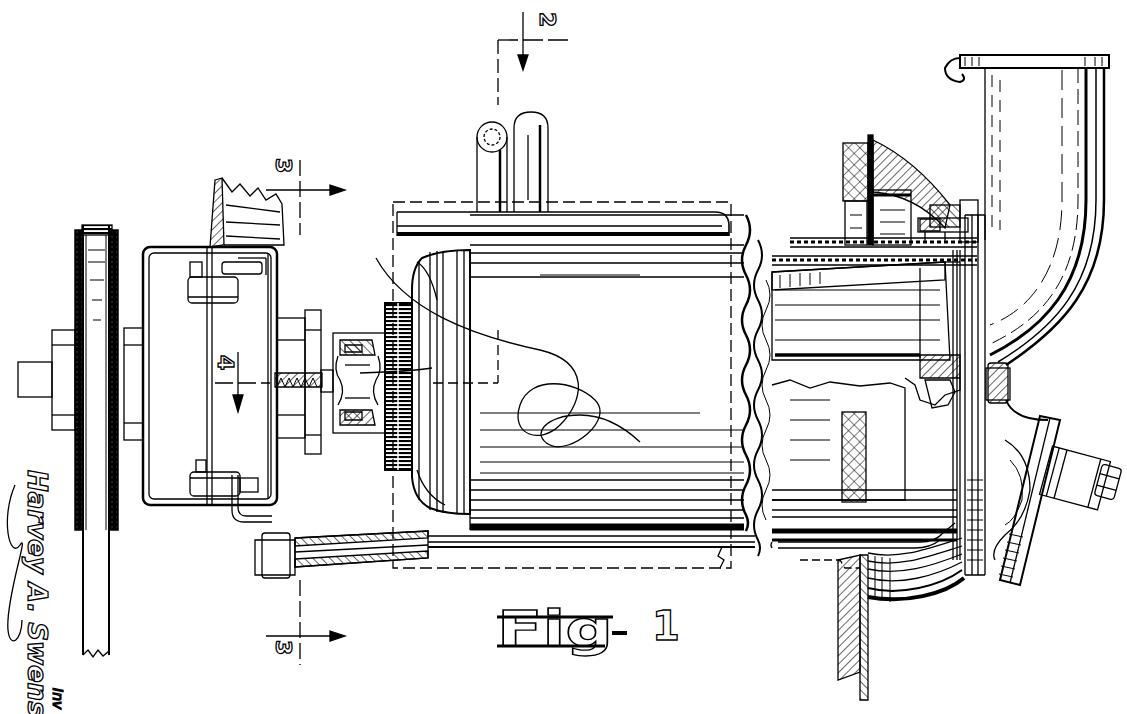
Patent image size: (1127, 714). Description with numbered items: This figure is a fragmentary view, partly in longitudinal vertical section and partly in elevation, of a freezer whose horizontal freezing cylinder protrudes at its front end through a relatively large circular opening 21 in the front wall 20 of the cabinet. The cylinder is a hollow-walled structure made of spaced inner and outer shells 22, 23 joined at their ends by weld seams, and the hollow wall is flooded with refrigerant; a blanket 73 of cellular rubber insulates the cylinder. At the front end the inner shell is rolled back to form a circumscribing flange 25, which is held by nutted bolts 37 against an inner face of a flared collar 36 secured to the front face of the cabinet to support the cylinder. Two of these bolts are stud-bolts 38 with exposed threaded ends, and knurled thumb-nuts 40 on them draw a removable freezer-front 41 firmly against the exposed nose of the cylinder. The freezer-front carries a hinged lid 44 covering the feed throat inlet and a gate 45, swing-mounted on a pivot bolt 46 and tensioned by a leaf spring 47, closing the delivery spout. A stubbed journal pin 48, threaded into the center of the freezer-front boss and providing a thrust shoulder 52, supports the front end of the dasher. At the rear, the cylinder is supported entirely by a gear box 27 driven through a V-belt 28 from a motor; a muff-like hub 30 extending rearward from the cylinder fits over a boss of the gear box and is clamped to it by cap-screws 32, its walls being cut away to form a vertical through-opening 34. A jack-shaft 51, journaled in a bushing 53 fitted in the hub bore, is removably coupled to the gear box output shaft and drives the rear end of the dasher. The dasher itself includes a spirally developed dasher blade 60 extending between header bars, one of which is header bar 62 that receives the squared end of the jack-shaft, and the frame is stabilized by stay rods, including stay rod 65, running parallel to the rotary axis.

The front wall 20 is at (843, 160).
The opening 21 is at (845, 203).
The inner shell 22 is at (785, 261).
The outer shell 23 is at (800, 244).
The circumscribing flange 25 is at (935, 208).
The gear box 27 is at (167, 250).
The V-belt 28 is at (100, 592).
The muff-like hub 30 is at (312, 312).
The cap-screws 32 is at (283, 378).
The vertical through-opening 34 is at (350, 428).
The flared collar 36 is at (905, 180).
The nutted bolts 37 is at (918, 225).
The stud-bolts 38 is at (1012, 386).
The knurled thumb-nuts 40 is at (1012, 372).
The freezer-front 41 is at (985, 582).
The hinged lid 44 is at (1062, 60).
The gate 45 is at (1015, 585).
The pivot bolt 46 is at (1102, 512).
The leaf spring 47 is at (1080, 458).
The journal pin 48 is at (912, 378).
The jack-shaft 51 is at (500, 352).
The thrust shoulder 52 is at (950, 408).
The bushing 53 is at (370, 428).
The dasher blade 60 is at (800, 285).
The header bar 62 is at (935, 338).
The stay rod 65 is at (847, 367).
The blanket 73 is at (657, 203).